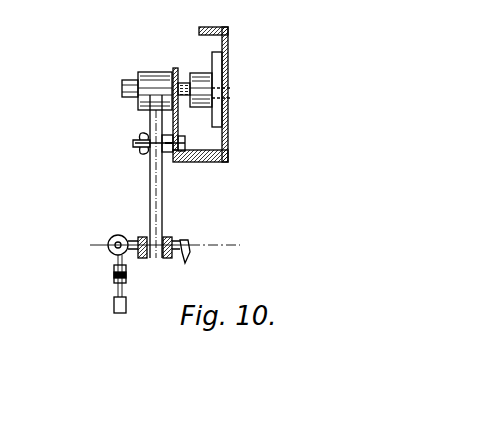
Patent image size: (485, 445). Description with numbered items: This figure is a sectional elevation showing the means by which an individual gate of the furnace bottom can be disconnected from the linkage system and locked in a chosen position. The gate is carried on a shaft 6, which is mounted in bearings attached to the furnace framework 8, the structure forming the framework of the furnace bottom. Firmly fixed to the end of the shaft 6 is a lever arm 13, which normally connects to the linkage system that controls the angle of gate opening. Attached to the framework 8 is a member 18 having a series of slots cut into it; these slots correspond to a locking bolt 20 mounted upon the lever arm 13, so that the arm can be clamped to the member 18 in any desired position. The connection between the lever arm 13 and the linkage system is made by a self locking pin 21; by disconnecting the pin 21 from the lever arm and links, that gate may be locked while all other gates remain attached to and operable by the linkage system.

The shaft 6 is at (122, 88).
The furnace framework 8 is at (228, 36).
The lever arm 13 is at (150, 181).
The member 18 is at (175, 67).
The locking bolt 20 is at (133, 143).
The self locking pin 21 is at (108, 245).